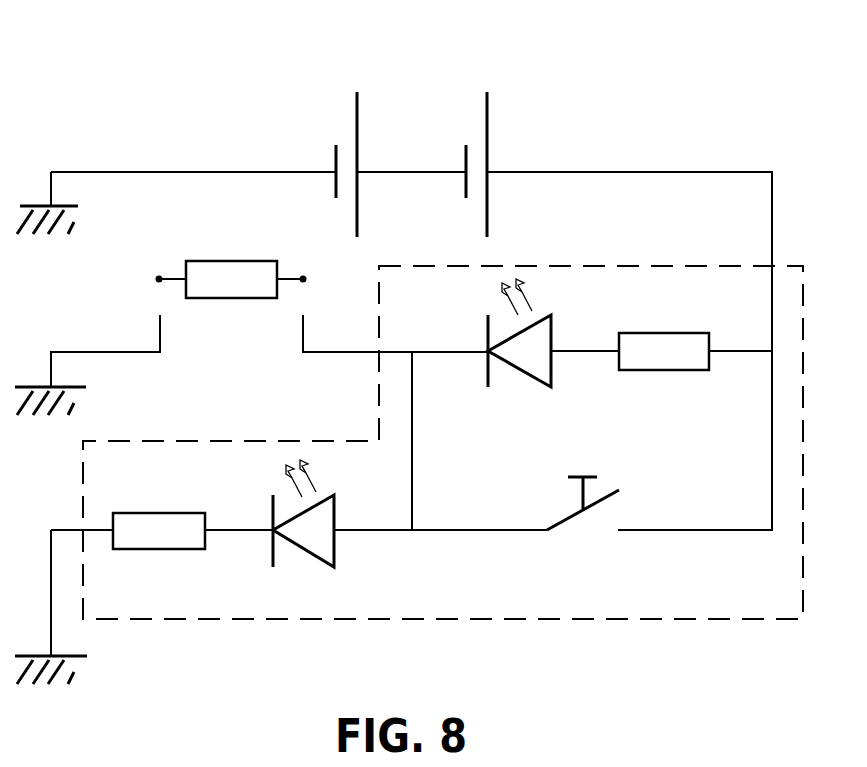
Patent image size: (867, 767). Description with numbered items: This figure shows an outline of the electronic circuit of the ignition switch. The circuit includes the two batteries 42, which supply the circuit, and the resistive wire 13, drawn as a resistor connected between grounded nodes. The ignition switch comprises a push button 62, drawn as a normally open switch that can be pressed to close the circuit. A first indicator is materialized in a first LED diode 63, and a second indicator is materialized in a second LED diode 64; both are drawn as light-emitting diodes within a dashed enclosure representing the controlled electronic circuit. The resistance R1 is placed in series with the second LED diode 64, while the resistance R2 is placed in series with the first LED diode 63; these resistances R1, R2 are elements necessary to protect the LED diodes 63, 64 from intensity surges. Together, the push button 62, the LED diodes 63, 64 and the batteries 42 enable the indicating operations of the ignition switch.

The batteries 42 is at (478, 100).
The resistive wire 13 is at (240, 275).
The second LED diode 64 is at (531, 365).
The resistance R1 is at (668, 357).
The resistance R2 is at (168, 521).
The first LED diode 63 is at (323, 544).
The push button 62 is at (583, 522).